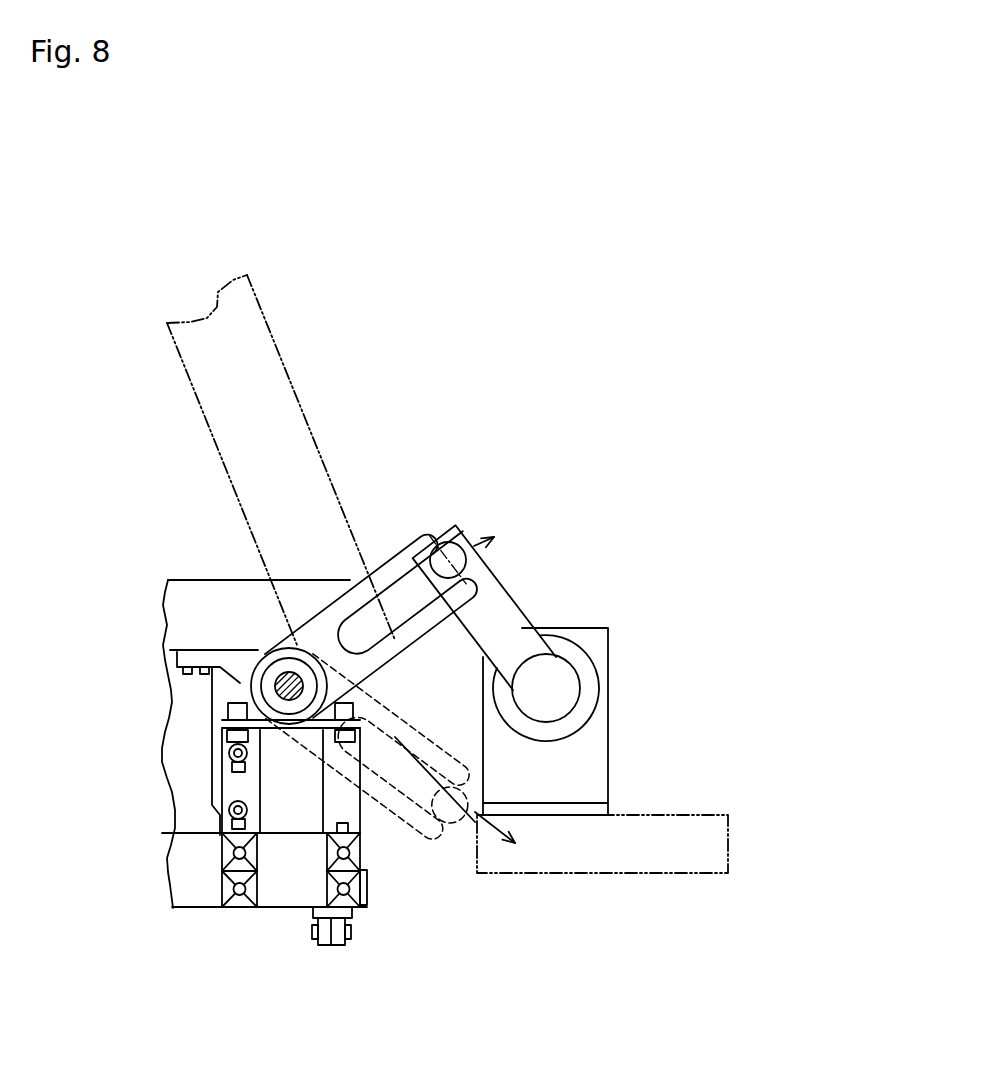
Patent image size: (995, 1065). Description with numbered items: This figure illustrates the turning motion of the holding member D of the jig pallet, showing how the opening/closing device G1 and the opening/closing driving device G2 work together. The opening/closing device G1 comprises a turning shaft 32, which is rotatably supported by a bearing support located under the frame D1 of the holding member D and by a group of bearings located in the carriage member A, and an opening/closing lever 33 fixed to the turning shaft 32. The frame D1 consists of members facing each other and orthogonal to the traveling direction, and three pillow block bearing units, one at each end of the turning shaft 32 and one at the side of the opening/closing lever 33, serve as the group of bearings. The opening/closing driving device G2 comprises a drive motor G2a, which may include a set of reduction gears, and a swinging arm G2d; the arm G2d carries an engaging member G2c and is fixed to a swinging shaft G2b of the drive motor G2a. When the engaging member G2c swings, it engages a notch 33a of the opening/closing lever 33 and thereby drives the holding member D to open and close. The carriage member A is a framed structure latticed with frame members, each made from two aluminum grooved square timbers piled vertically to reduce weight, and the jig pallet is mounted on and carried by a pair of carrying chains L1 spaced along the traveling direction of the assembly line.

The holding member D is at (280, 659).
The frame D1 is at (250, 357).
The opening/closing device G1 is at (350, 563).
The turning shaft 32 is at (179, 730).
The opening/closing lever 33 is at (390, 623).
The notch 33a is at (385, 586).
The opening/closing driving device G2 is at (617, 622).
The drive motor G2a is at (649, 750).
The swinging shaft G2b is at (651, 688).
The engaging member G2c is at (565, 478).
The swinging arm G2d is at (611, 607).
The carriage member A is at (371, 823).
The carrying chains L1 is at (412, 975).